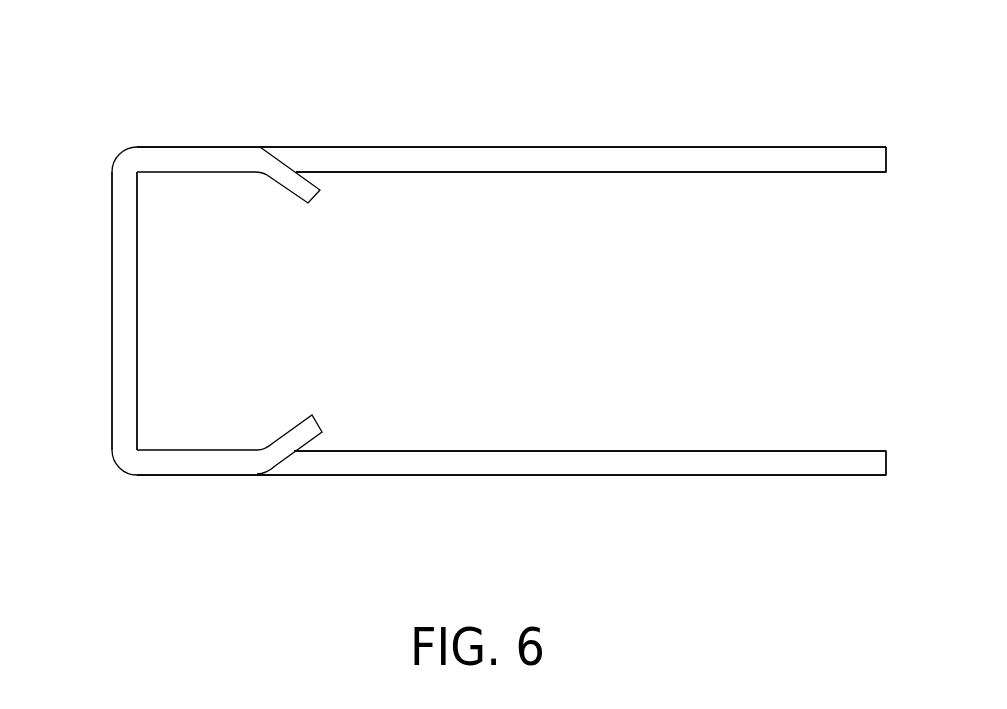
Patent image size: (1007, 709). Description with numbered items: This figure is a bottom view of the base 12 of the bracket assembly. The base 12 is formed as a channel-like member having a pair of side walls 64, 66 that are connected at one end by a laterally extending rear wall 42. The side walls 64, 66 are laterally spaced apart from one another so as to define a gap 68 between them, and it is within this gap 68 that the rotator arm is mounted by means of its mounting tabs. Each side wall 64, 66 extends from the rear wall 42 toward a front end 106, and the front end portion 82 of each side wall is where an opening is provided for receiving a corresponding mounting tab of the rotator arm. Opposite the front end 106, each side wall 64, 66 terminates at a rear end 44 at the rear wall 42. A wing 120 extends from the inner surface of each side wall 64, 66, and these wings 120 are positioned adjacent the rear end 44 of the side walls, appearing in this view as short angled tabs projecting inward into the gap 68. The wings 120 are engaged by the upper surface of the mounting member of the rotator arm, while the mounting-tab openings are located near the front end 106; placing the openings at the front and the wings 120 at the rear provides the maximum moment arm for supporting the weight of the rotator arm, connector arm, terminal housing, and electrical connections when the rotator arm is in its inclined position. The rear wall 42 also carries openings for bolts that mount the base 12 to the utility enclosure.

The base 12 is at (690, 515).
The rear wall 42 is at (137, 297).
The rear end 44 is at (112, 318).
The side wall 64 is at (613, 172).
The side wall 66 is at (652, 450).
The gap 68 is at (495, 318).
The front end portion 82 is at (877, 475).
The front end 106 is at (887, 147).
The wing 120 is at (298, 202).